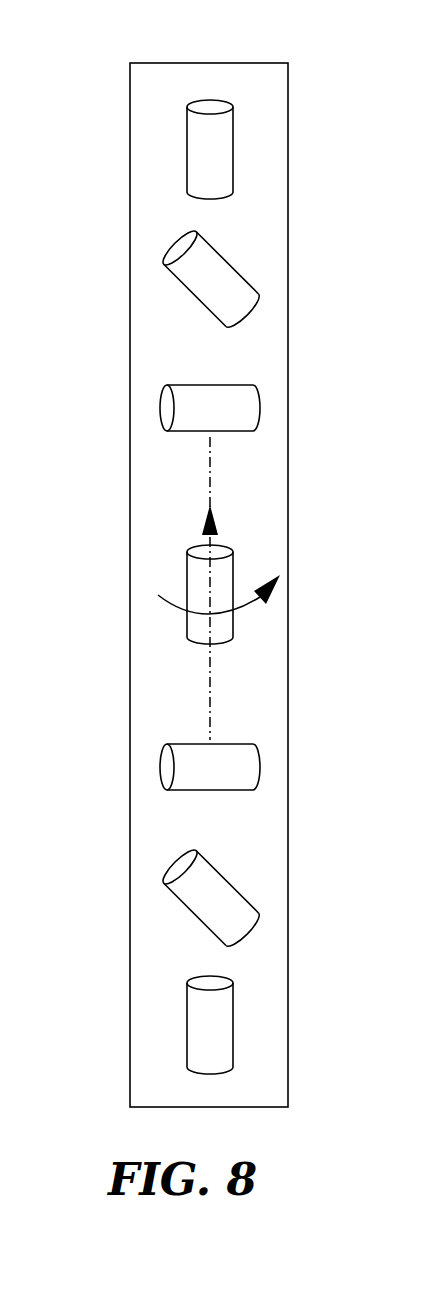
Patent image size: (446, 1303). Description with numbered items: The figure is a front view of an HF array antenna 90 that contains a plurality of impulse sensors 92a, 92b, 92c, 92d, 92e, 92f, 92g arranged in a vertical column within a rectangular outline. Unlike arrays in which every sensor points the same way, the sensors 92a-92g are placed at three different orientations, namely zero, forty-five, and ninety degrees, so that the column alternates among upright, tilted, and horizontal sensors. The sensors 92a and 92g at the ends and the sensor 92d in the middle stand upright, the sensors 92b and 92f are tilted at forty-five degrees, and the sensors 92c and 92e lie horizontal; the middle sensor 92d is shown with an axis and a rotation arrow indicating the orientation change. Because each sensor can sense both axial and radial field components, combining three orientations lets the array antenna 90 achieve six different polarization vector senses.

The array antenna 90 is at (153, 47).
The sensor 92a is at (187, 146).
The sensor 92b is at (188, 282).
The sensor 92c is at (190, 410).
The sensor 92d is at (187, 580).
The sensor 92e is at (190, 770).
The sensor 92f is at (190, 905).
The sensor 92g is at (188, 1037).